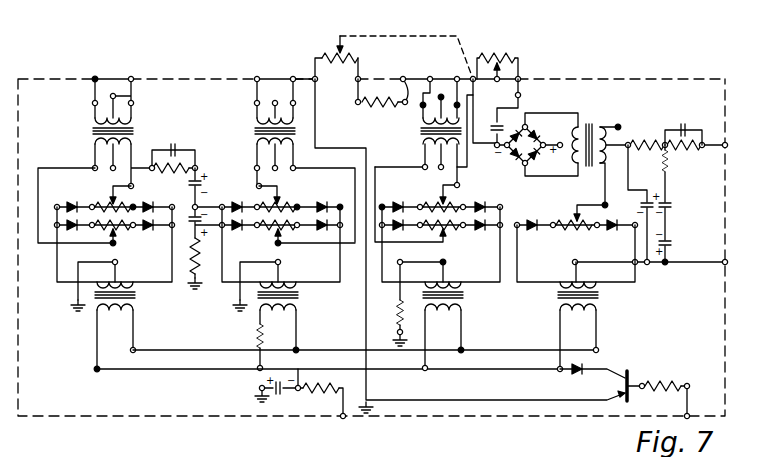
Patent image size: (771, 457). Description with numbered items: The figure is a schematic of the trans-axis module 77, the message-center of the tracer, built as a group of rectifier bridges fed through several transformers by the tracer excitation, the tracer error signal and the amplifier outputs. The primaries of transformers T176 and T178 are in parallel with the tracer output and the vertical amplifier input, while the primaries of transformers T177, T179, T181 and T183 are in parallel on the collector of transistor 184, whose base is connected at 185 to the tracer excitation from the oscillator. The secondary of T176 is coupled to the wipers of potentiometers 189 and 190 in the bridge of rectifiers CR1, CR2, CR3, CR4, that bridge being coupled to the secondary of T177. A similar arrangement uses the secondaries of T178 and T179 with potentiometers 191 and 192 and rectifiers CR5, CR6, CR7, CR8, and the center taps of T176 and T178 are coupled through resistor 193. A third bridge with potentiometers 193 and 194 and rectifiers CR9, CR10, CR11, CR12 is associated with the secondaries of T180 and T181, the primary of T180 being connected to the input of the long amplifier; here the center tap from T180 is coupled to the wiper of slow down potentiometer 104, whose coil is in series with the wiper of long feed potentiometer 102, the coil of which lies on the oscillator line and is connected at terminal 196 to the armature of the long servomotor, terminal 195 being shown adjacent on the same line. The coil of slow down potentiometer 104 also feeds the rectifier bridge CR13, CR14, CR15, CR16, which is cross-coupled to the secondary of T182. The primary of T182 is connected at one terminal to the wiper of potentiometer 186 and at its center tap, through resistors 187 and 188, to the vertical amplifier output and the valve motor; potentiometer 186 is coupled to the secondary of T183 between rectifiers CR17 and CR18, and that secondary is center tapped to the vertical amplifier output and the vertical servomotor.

The trans-axis module 77 is at (566, 79).
The long feed potentiometer 102 is at (320, 48).
The slow down potentiometer 104 is at (513, 56).
The terminal 196 is at (362, 78).
The terminal 195 is at (407, 104).
The resistor / potentiometer 193 is at (185, 158).
The potentiometer 189 is at (108, 200).
The potentiometer 190 is at (118, 232).
The potentiometer 191 is at (283, 199).
The potentiometer 192 is at (273, 232).
The potentiometer 194 is at (450, 231).
The potentiometer 186 is at (577, 203).
The resistor 187 is at (640, 138).
The resistor 188 is at (692, 128).
The transistor 184 is at (634, 373).
The base connection 185 is at (687, 398).
The transformer T176 is at (135, 131).
The transformer T177 is at (135, 296).
The transformer T178 is at (258, 128).
The transformer T179 is at (300, 296).
The transformer T180 is at (422, 131).
The transformer T181 is at (463, 296).
The transformer T182 is at (598, 125).
The transformer T183 is at (598, 296).
The rectifier CR1 is at (67, 202).
The rectifier CR2 is at (67, 234).
The rectifier CR3 is at (149, 201).
The rectifier CR4 is at (149, 234).
The rectifier CR5 is at (232, 201).
The rectifier CR6 is at (232, 234).
The rectifier CR7 is at (325, 201).
The rectifier CR8 is at (325, 234).
The rectifier CR9 is at (441, 201).
The rectifier CR10 is at (395, 234).
The rectifier CR11 is at (478, 201).
The rectifier CR12 is at (476, 234).
The rectifier CR13 is at (510, 129).
The rectifier CR14 is at (538, 126).
The rectifier CR15 is at (542, 158).
The rectifier CR16 is at (500, 158).
The rectifier CR17 is at (538, 214).
The rectifier CR18 is at (608, 221).